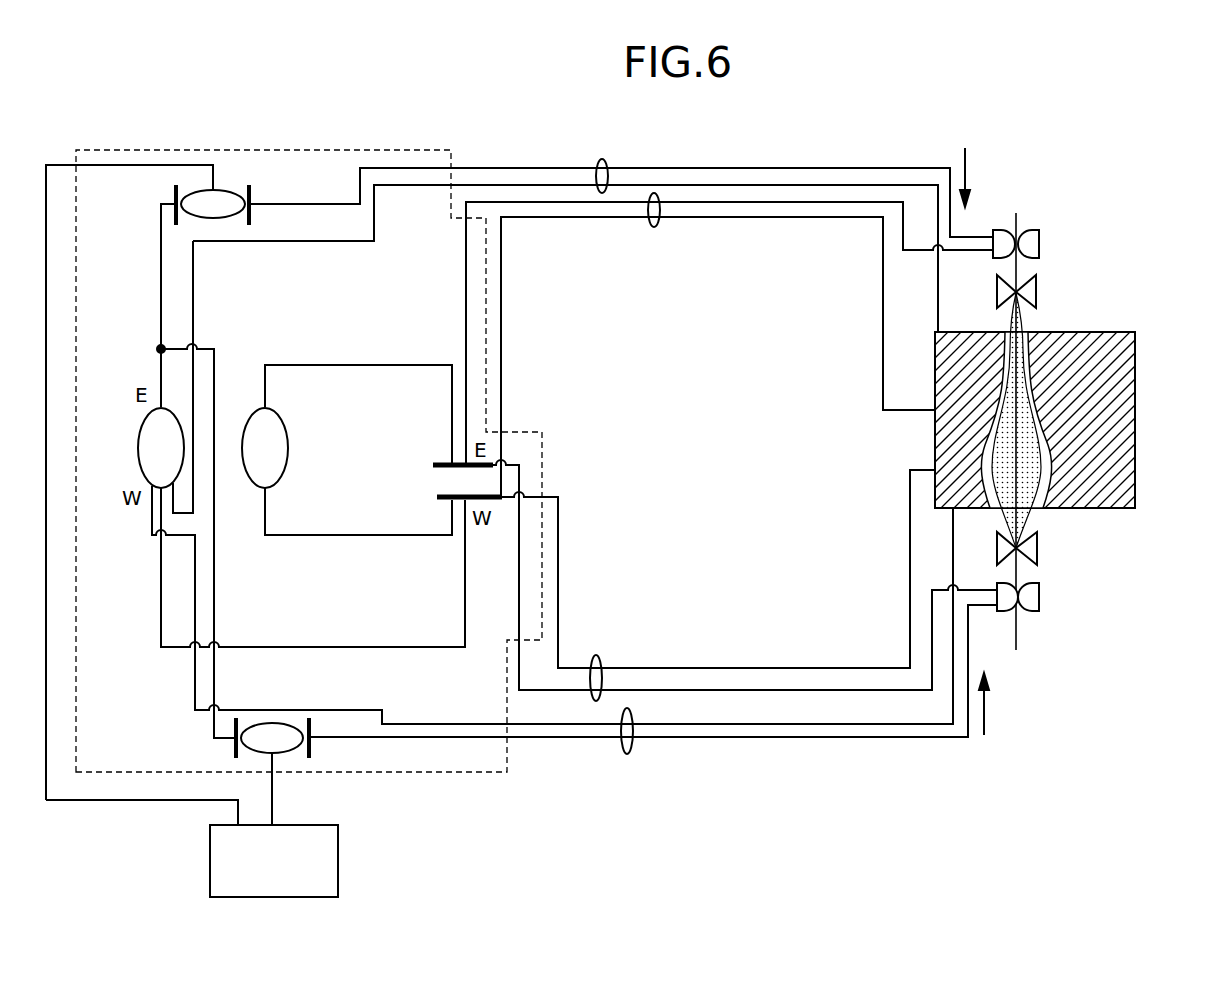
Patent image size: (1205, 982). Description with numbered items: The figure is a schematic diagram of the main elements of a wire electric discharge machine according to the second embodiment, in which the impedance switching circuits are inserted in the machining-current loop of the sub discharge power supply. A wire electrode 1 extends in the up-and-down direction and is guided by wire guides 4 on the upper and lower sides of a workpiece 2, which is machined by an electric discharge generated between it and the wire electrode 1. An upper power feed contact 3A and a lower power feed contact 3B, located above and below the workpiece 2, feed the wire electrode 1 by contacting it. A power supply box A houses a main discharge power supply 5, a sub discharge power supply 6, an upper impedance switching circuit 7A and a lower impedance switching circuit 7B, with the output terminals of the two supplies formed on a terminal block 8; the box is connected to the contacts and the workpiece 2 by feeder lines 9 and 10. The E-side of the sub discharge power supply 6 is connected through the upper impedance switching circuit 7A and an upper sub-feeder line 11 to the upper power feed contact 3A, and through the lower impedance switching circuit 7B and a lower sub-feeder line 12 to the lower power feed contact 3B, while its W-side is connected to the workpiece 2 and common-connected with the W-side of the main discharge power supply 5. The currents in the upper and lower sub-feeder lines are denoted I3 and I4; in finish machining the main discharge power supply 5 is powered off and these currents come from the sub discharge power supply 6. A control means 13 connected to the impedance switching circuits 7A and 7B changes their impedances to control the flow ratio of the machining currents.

The wire electrode 1 is at (1018, 220).
The workpiece 2 is at (1135, 420).
The upper power feed contact 3A is at (1039, 244).
The lower power feed contact 3B is at (1039, 597).
The wire guide 4 is at (1036, 292).
The main discharge power supply 5 is at (291, 447).
The sub discharge power supply 6 is at (138, 448).
The upper impedance switching circuit 7A is at (213, 218).
The lower impedance switching circuit 7B is at (272, 722).
The terminal block 8 is at (433, 465).
The feeder line 9 is at (602, 665).
The feeder line 10 is at (660, 210).
The upper sub-feeder line 11 is at (608, 176).
The lower sub-feeder line 12 is at (633, 745).
The control means 13 is at (315, 825).
The power supply box A is at (418, 150).
The machining current I3 is at (977, 177).
The machining current I4 is at (995, 704).